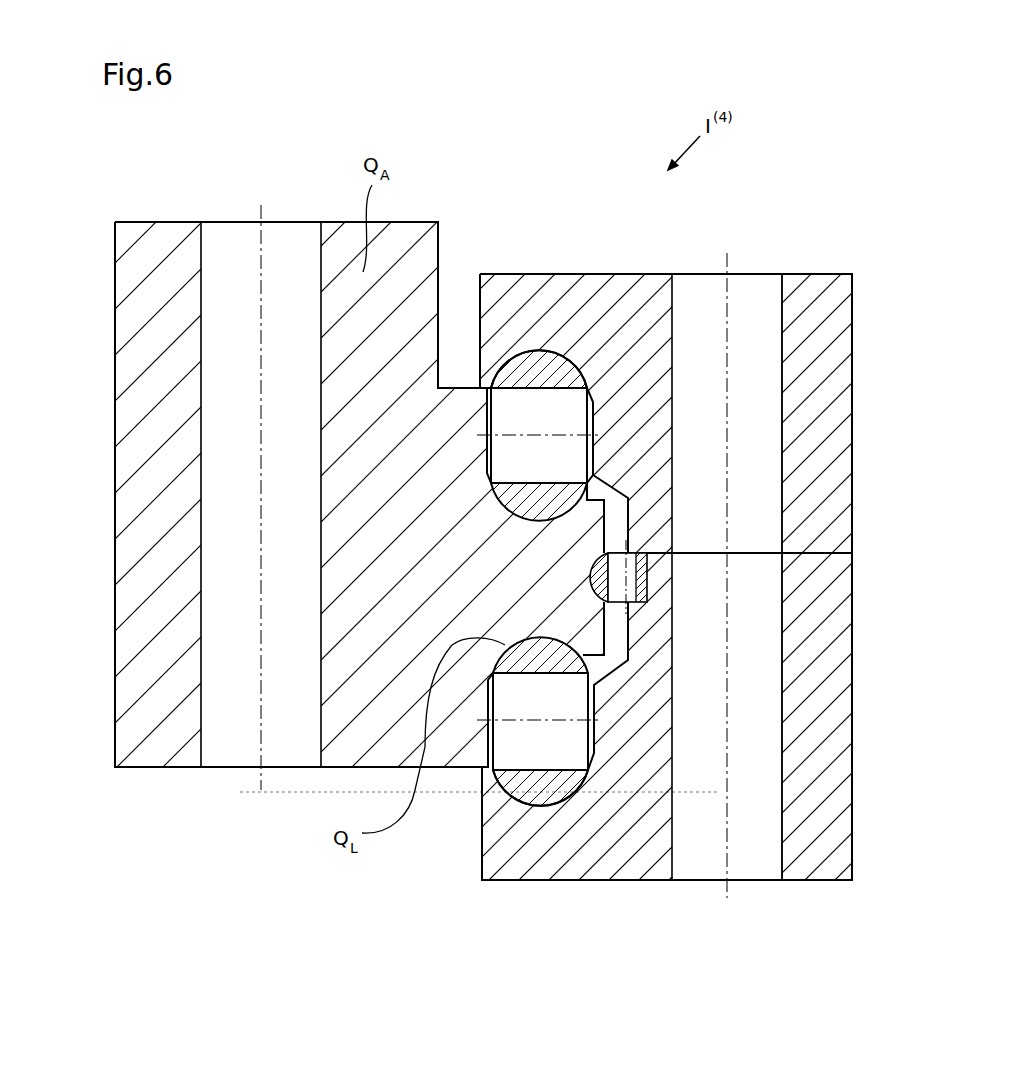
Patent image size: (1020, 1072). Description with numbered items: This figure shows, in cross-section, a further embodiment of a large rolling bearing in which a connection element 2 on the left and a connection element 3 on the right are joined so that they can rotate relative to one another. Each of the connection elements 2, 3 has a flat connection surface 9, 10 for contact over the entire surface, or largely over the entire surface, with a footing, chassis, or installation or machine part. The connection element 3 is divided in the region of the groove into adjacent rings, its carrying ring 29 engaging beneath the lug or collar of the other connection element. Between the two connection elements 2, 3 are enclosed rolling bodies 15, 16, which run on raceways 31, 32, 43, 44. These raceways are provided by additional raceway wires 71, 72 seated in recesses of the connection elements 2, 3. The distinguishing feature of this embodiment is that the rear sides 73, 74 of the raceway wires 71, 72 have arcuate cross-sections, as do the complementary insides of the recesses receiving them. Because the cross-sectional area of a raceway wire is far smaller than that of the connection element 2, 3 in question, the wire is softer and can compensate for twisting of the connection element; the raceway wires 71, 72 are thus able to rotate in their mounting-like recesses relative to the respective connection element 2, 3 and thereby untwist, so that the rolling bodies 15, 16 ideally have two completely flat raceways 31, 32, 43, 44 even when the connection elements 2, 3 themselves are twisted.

The connection element 2 is at (142, 482).
The connection element 3 is at (827, 375).
The flat connection surface 9 is at (815, 273).
The flat connection surface 10 is at (808, 884).
The rolling bodies 15 is at (563, 407).
The rolling bodies 16 is at (527, 733).
The carrying ring 29 is at (820, 734).
The raceway 31 is at (538, 483).
The raceway 32 is at (550, 673).
The raceway 43 is at (487, 408).
The raceway 44 is at (550, 767).
The additional raceway wire 71 is at (525, 363).
The additional raceway wire 72 is at (487, 773).
The rear side 73 is at (538, 357).
The rear side 74 is at (590, 788).